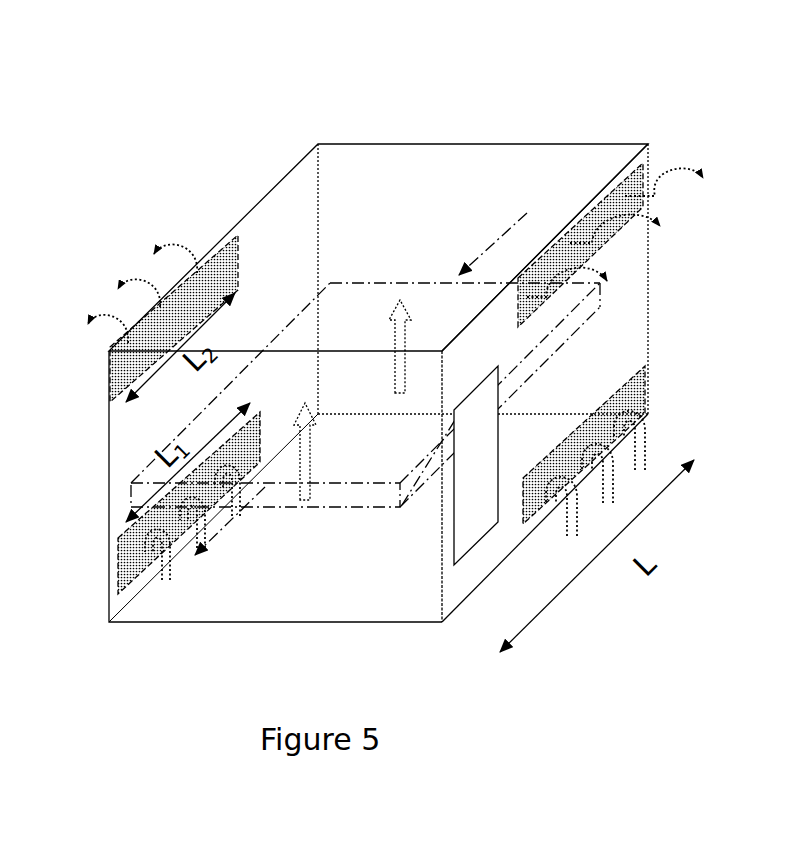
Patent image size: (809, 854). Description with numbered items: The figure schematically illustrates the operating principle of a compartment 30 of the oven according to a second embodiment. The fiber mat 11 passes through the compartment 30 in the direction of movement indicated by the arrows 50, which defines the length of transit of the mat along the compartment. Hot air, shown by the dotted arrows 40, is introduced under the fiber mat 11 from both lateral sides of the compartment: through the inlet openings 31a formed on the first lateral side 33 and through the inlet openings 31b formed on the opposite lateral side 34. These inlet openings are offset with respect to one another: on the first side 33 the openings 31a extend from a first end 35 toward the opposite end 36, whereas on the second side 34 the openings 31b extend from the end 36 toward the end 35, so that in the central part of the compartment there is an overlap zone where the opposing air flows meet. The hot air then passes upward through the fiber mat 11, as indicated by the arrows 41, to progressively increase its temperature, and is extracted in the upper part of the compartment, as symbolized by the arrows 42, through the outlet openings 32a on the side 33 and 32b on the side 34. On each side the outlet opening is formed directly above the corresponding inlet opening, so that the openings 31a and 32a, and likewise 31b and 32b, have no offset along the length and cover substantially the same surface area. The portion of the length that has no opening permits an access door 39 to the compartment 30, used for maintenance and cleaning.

The compartment 30 is at (571, 107).
The direction of movement of the mat 50 is at (487, 243).
The opposite lateral side 34 is at (307, 175).
The first end of the compartment 35 is at (651, 301).
The fiber mat 11 is at (353, 507).
The first lateral side 33 is at (455, 373).
The other end of the compartment 36 is at (439, 505).
The access door 39 is at (457, 488).
The arrows of air passing through the mat 41 is at (400, 367).
The outlet opening on the opposite side 32b is at (223, 250).
The outlet opening on the first side 32a is at (645, 178).
The inlet opening on the first side 31a is at (633, 387).
The inlet opening on the opposite side 31b is at (130, 568).
The arrows of extracted air 42 is at (133, 293).
The arrows of hot air circulation 40 is at (143, 543).